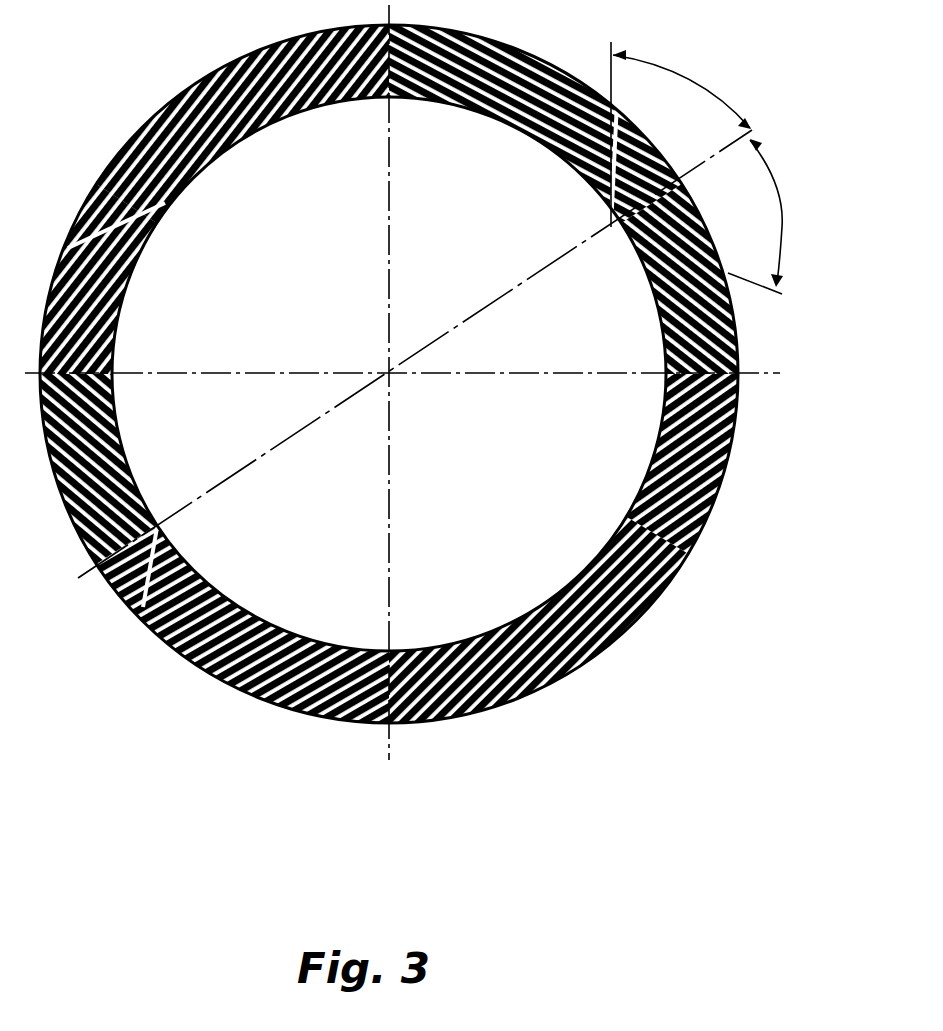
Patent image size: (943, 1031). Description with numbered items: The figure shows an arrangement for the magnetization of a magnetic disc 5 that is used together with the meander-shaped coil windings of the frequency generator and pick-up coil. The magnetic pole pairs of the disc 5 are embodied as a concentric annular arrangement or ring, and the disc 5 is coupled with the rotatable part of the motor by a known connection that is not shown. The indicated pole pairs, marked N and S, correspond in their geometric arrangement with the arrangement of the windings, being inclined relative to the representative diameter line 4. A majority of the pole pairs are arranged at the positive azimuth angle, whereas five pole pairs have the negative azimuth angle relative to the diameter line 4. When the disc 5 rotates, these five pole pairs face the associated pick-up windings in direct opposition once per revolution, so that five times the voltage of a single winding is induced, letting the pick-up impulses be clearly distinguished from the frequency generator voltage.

The diameter line 4 is at (752, 130).
The magnetic disc 5 is at (410, 374).
The south pole S is at (735, 355).
The north pole N is at (727, 398).